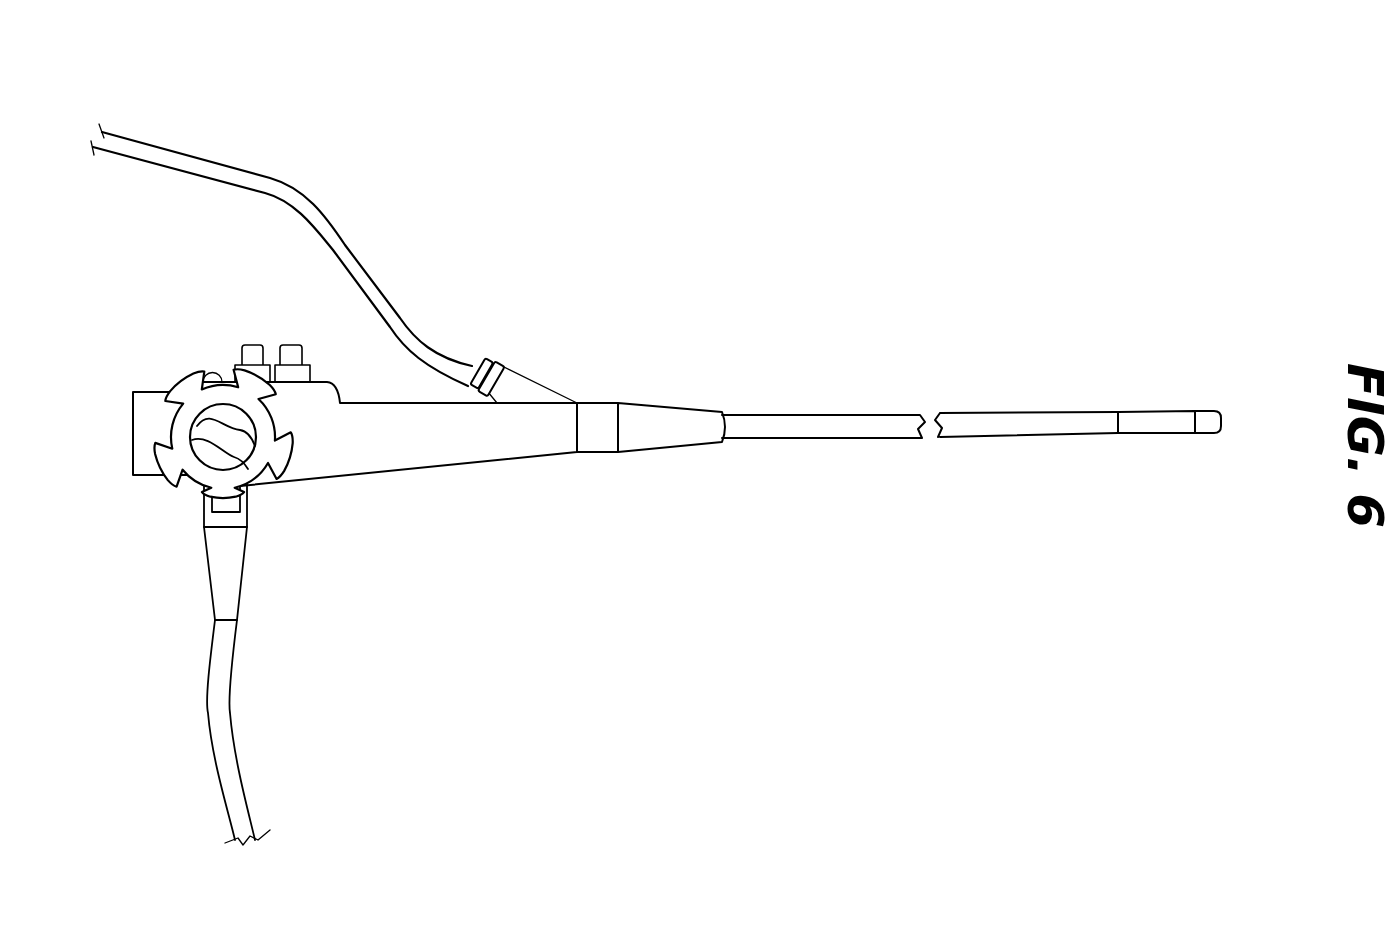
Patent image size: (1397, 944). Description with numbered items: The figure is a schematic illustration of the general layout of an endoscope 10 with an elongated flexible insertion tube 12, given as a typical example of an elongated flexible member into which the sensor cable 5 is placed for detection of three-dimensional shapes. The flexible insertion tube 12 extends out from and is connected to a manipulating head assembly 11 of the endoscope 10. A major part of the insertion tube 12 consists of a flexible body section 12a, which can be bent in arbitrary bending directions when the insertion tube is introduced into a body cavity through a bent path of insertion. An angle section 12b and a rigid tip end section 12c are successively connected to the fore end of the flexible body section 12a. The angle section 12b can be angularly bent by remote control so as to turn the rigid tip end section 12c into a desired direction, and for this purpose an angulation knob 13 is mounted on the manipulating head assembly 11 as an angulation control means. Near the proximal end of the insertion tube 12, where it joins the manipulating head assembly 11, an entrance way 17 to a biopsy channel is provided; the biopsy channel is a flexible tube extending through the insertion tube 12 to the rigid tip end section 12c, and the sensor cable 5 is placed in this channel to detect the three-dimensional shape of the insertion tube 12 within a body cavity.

The sensor cable 5 is at (373, 277).
The endoscope 10 is at (675, 483).
The manipulating head assembly 11 is at (520, 455).
The flexible insertion tube 12 is at (872, 446).
The flexible body section 12a is at (1025, 417).
The angle section 12b is at (1152, 432).
The rigid tip end section 12c is at (1205, 433).
The angulation knob 13 is at (263, 463).
The entrance way to biopsy channel 17 is at (518, 378).